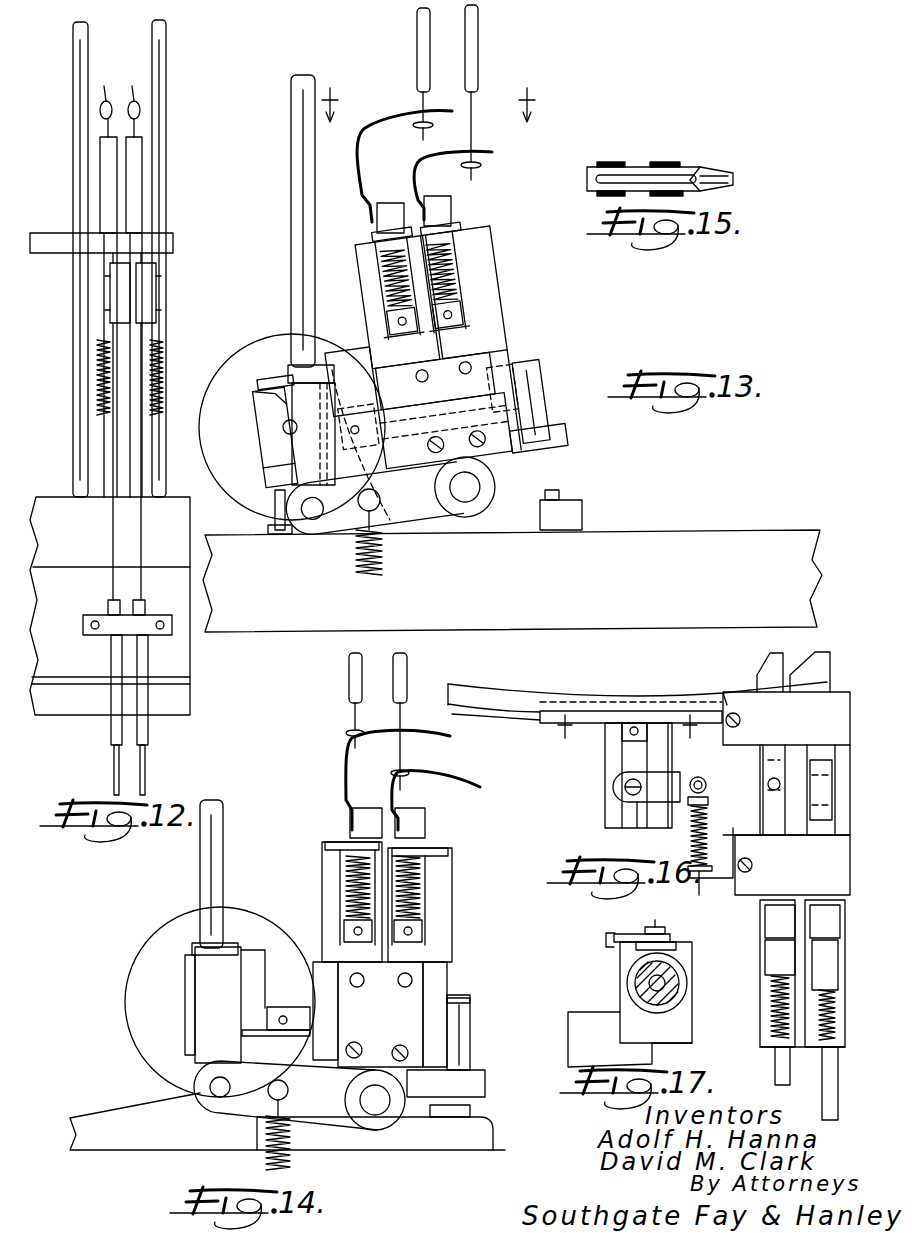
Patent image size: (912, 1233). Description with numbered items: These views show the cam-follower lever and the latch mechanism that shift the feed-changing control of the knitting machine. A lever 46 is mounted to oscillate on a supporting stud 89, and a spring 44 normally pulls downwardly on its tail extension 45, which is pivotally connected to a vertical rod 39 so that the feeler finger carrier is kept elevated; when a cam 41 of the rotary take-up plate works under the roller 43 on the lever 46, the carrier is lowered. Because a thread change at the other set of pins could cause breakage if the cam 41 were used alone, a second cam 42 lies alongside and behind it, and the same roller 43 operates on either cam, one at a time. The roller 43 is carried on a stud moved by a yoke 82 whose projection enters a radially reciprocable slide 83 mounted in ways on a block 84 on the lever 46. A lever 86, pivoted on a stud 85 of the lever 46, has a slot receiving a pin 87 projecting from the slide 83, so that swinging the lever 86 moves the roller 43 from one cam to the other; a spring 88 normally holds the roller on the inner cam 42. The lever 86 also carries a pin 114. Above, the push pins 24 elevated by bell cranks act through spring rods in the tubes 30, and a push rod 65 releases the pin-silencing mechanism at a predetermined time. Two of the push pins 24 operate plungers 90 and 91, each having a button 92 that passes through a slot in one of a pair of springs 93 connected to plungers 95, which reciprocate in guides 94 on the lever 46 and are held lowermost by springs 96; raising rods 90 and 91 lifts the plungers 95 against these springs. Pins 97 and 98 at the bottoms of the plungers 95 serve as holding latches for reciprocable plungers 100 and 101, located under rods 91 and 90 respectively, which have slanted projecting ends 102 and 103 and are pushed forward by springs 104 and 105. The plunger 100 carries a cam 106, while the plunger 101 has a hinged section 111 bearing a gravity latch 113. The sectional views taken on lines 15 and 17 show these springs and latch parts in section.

In FIG. 13, the section line 15 is at (429, 119).
In FIG. 16, the section line 17 is at (627, 737).
In FIG. 12, the push pin 24 is at (132, 100).
In FIG. 12, the tube 30 is at (73, 130).
In FIG. 13, the vertical rod 39 is at (291, 195).
In FIG. 14, the vertical rod 39 is at (223, 850).
In FIG. 14, the cam 41 is at (150, 1145).
In FIG. 16, the cam 41 is at (488, 720).
In FIG. 16, the second cam 42 is at (500, 690).
In FIG. 13, the roller 43 is at (258, 345).
In FIG. 16, the roller 43 is at (622, 710).
In FIG. 13, the spring 44 is at (356, 560).
In FIG. 14, the spring 44 is at (292, 1160).
In FIG. 13, the tail extension 45 is at (415, 515).
In FIG. 14, the tail extension 45 is at (233, 1112).
In FIG. 13, the lever 46 is at (275, 468).
In FIG. 14, the lever 46 is at (185, 1035).
In FIG. 16, the lever 46 is at (758, 830).
In FIG. 17, the lever 46 is at (580, 1043).
In FIG. 12, the push rod 65 is at (166, 112).
In FIG. 16, the yoke 82 is at (622, 728).
In FIG. 17, the yoke 82 is at (630, 975).
In FIG. 13, the slide 83 is at (270, 395).
In FIG. 16, the slide 83 is at (637, 828).
In FIG. 17, the slide 83 is at (668, 934).
In FIG. 13, the block 84 is at (268, 440).
In FIG. 14, the block 84 is at (195, 987).
In FIG. 16, the block 84 is at (605, 820).
In FIG. 17, the block 84 is at (692, 958).
In FIG. 13, the pivot stud 85 is at (526, 362).
In FIG. 14, the pivot stud 85 is at (470, 1000).
In FIG. 13, the lever 86 is at (263, 378).
In FIG. 14, the lever 86 is at (258, 955).
In FIG. 16, the lever 86 is at (740, 770).
In FIG. 17, the lever 86 is at (634, 934).
In FIG. 16, the pin 87 is at (625, 787).
In FIG. 17, the pin 87 is at (655, 920).
In FIG. 16, the spring 88 is at (691, 845).
In FIG. 13, the supporting stud 89 is at (466, 488).
In FIG. 14, the supporting stud 89 is at (378, 1105).
In FIG. 12, the plunger 90 is at (158, 385).
In FIG. 13, the plunger 90 is at (417, 100).
In FIG. 15, the plunger 90 is at (625, 140).
In FIG. 14, the plunger 90 is at (349, 710).
In FIG. 12, the plunger 91 is at (108, 410).
In FIG. 13, the plunger 91 is at (472, 118).
In FIG. 15, the plunger 91 is at (712, 170).
In FIG. 14, the plunger 91 is at (400, 711).
In FIG. 13, the button 92 is at (428, 126).
In FIG. 14, the button 92 is at (402, 720).
In FIG. 13, the spring 93 is at (385, 122).
In FIG. 15, the spring 93 is at (588, 188).
In FIG. 14, the spring 93 is at (433, 770).
In FIG. 13, the guide 94 is at (372, 236).
In FIG. 14, the guide 94 is at (425, 842).
In FIG. 13, the plunger 95 is at (377, 218).
In FIG. 15, the plunger 95 is at (610, 162).
In FIG. 14, the plunger 95 is at (358, 880).
In FIG. 13, the spring 96 is at (388, 290).
In FIG. 14, the spring 96 is at (422, 910).
In FIG. 13, the pin 97 is at (498, 315).
In FIG. 14, the pin 97 is at (410, 950).
In FIG. 13, the pin 98 is at (392, 344).
In FIG. 14, the pin 98 is at (338, 926).
In FIG. 16, the plunger 100 is at (824, 980).
In FIG. 16, the plunger 101 is at (765, 965).
In FIG. 16, the projecting end 102 is at (830, 648).
In FIG. 16, the projecting end 103 is at (768, 655).
In FIG. 16, the spring 104 is at (822, 1045).
In FIG. 16, the spring 105 is at (771, 1025).
In FIG. 16, the cam 106 is at (820, 760).
In FIG. 16, the hinged section 111 is at (762, 815).
In FIG. 16, the gravity latch 113 is at (775, 755).
In FIG. 16, the pin 114 is at (708, 785).